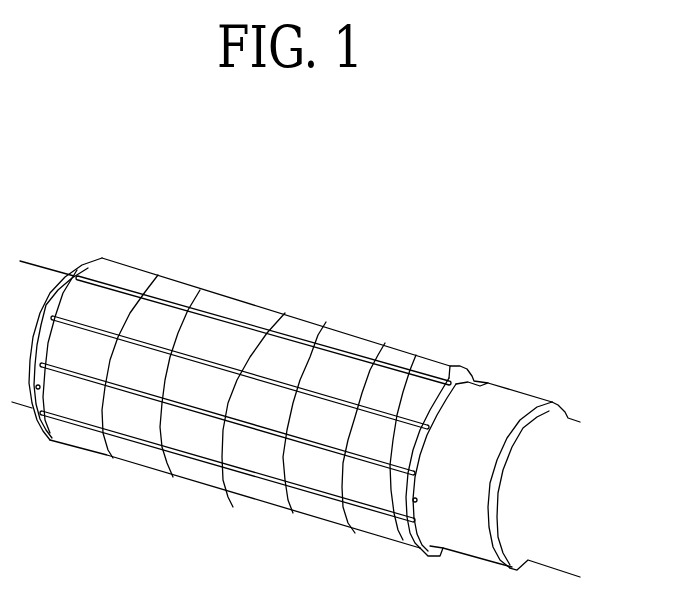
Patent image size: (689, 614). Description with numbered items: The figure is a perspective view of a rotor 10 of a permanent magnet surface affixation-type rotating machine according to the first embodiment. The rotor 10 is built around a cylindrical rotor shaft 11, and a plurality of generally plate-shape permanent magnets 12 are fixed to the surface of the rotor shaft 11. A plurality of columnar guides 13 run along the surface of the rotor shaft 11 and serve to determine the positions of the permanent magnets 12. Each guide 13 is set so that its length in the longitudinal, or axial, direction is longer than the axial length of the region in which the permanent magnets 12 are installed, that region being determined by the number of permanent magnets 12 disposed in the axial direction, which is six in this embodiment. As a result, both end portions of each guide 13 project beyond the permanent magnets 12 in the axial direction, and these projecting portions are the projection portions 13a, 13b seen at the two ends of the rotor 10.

The rotor 10 is at (250, 345).
The rotor shaft 11 is at (296, 419).
The permanent magnets 12 is at (245, 391).
The guides 13 is at (273, 407).
The projection portion 13a is at (65, 322).
The projection portion 13b is at (464, 437).